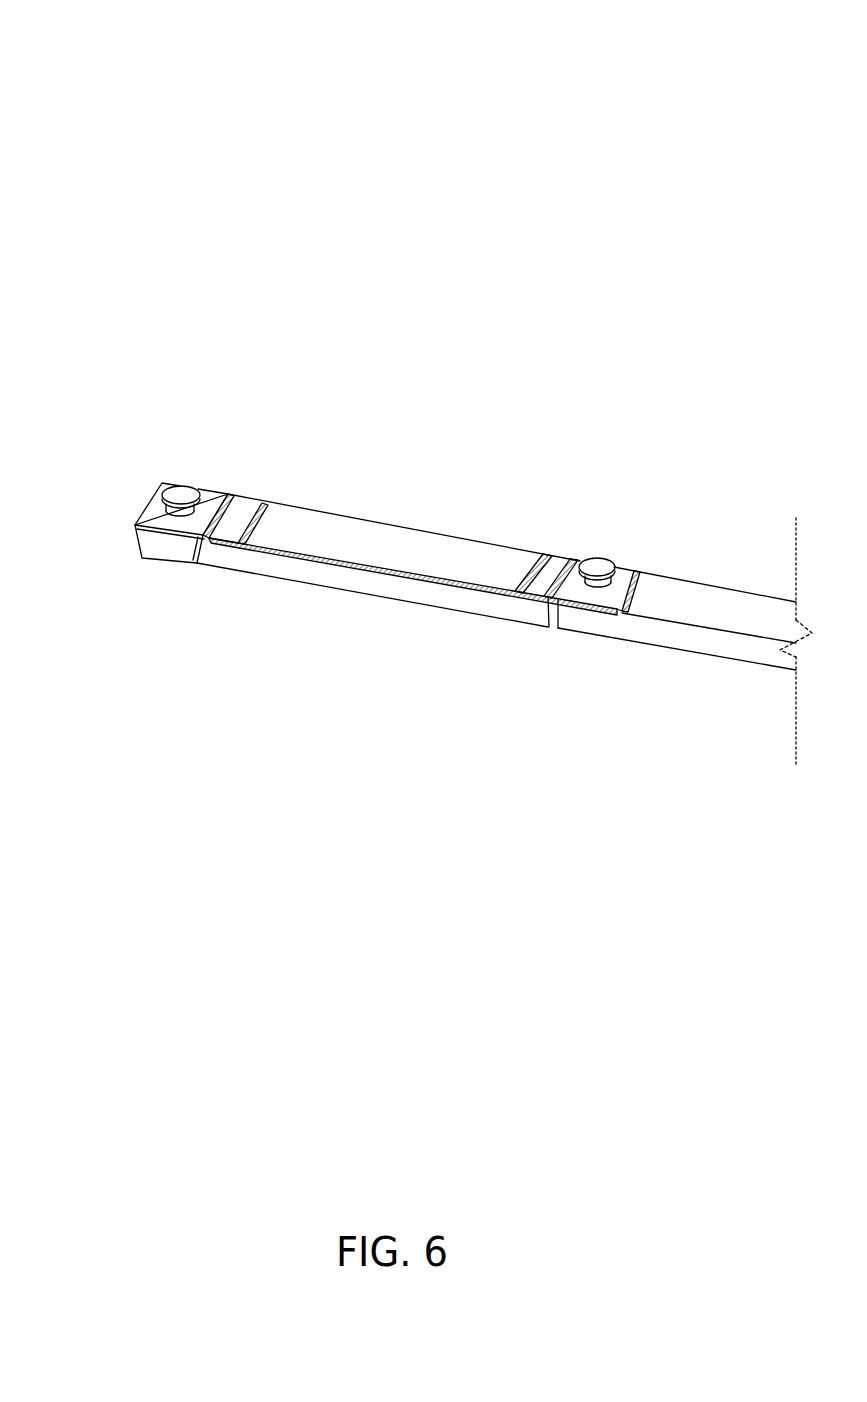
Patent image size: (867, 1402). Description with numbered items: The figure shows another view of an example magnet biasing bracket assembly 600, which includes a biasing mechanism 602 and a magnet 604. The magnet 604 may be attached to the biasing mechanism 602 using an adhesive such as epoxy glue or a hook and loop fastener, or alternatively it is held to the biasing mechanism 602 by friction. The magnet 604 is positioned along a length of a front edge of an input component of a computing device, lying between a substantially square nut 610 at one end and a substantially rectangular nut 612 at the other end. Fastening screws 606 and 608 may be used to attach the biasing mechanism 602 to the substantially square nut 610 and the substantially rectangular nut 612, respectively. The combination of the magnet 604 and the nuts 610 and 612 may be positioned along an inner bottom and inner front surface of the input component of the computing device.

The magnet biasing bracket assembly 600 is at (131, 78).
The biasing mechanism 602 is at (556, 553).
The magnet 604 is at (380, 598).
The fastening screw 606 is at (183, 487).
The fastening screw 608 is at (605, 557).
The substantially square nut 610 is at (165, 558).
The substantially rectangular nut 612 is at (715, 657).